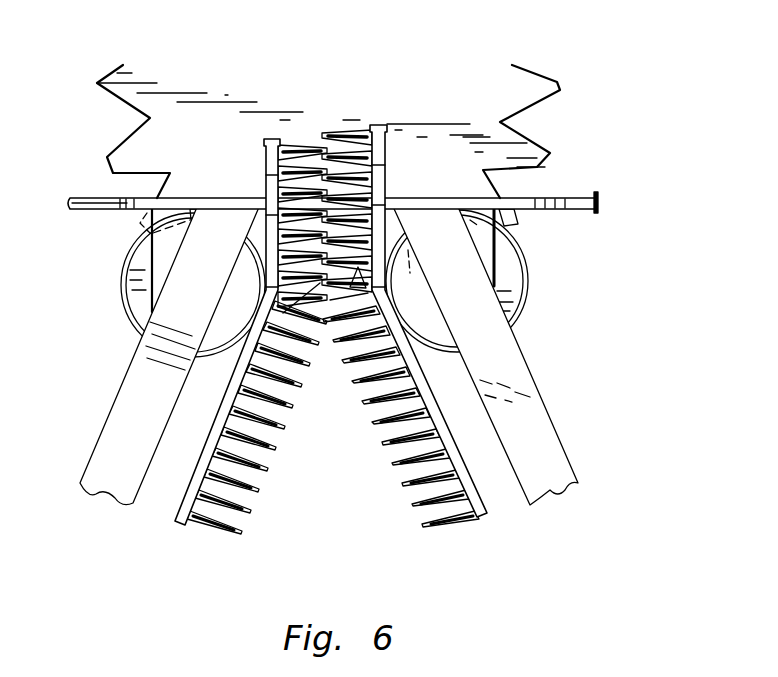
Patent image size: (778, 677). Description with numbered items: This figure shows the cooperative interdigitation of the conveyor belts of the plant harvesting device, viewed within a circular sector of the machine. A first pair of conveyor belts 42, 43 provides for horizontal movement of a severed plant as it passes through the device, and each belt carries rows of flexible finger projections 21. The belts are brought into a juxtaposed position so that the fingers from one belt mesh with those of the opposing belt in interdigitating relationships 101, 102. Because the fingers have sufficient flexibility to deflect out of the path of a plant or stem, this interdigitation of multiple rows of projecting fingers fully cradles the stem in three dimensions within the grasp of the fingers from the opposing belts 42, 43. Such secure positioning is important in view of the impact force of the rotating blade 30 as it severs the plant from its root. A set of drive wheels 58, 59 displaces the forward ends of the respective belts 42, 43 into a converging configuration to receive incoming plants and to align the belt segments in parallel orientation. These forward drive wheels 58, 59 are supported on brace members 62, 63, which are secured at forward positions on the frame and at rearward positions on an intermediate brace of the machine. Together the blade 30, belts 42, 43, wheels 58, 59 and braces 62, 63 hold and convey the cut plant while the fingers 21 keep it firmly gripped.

The rotating blade 30 is at (347, 110).
The interdigitating relationship 101 is at (353, 130).
The interdigitating relationship 102 is at (303, 147).
The conveyor belt 42 is at (385, 173).
The conveyor belt 43 is at (266, 167).
The drive wheel 58 is at (515, 276).
The drive wheel 59 is at (137, 313).
The brace member 62 is at (555, 457).
The brace member 63 is at (130, 410).
The finger projection 21 is at (230, 534).